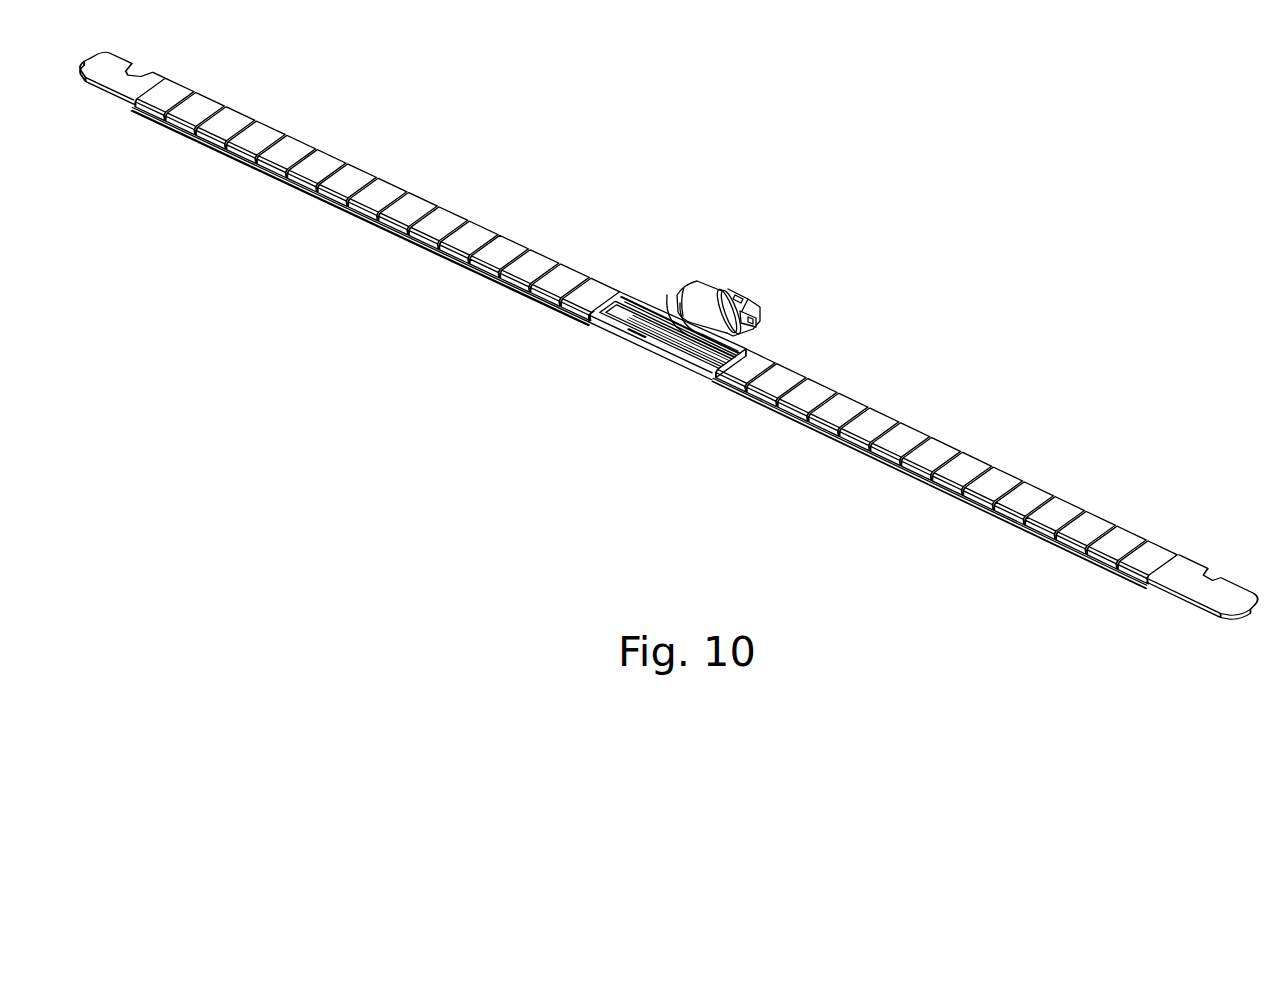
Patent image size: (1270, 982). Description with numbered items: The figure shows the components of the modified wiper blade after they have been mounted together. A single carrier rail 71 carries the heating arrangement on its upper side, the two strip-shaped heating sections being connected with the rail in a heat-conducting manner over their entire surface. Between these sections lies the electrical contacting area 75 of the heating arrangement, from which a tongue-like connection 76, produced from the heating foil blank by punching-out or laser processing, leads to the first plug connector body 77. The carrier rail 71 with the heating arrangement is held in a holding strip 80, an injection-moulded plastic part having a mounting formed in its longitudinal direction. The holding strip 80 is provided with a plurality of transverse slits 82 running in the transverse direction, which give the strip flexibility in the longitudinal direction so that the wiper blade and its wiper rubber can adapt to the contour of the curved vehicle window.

The carrier rail 71 is at (1228, 598).
The electrical contacting area 75 is at (620, 341).
The tongue-like connection 76 is at (668, 310).
The first plug connector body 77 is at (746, 295).
The holding strip 80 is at (990, 477).
The transverse slits 82 is at (457, 220).